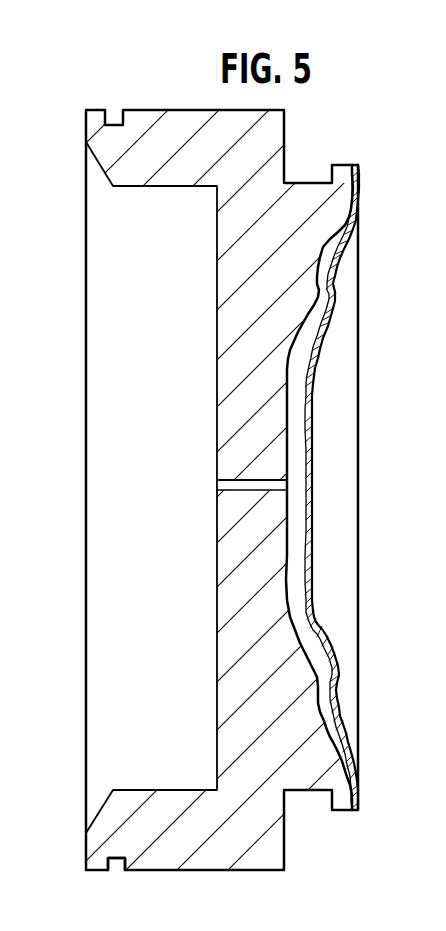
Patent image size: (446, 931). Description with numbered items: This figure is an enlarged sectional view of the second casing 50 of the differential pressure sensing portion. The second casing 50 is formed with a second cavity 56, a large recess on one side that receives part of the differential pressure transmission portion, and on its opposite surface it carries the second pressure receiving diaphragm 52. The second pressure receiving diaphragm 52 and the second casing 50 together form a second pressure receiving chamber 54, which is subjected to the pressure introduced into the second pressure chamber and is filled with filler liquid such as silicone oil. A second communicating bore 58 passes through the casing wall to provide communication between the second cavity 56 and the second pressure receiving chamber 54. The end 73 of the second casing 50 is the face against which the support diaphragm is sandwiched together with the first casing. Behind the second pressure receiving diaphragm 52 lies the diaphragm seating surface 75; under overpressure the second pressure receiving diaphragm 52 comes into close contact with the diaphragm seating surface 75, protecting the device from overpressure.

The second casing 50 is at (181, 110).
The second pressure receiving diaphragm 52 is at (337, 692).
The second pressure receiving chamber 54 is at (312, 447).
The second cavity 56 is at (133, 720).
The second communicating bore 58 is at (230, 484).
The end of the second casing 73 is at (90, 866).
The diaphragm seating surface 75 is at (313, 388).